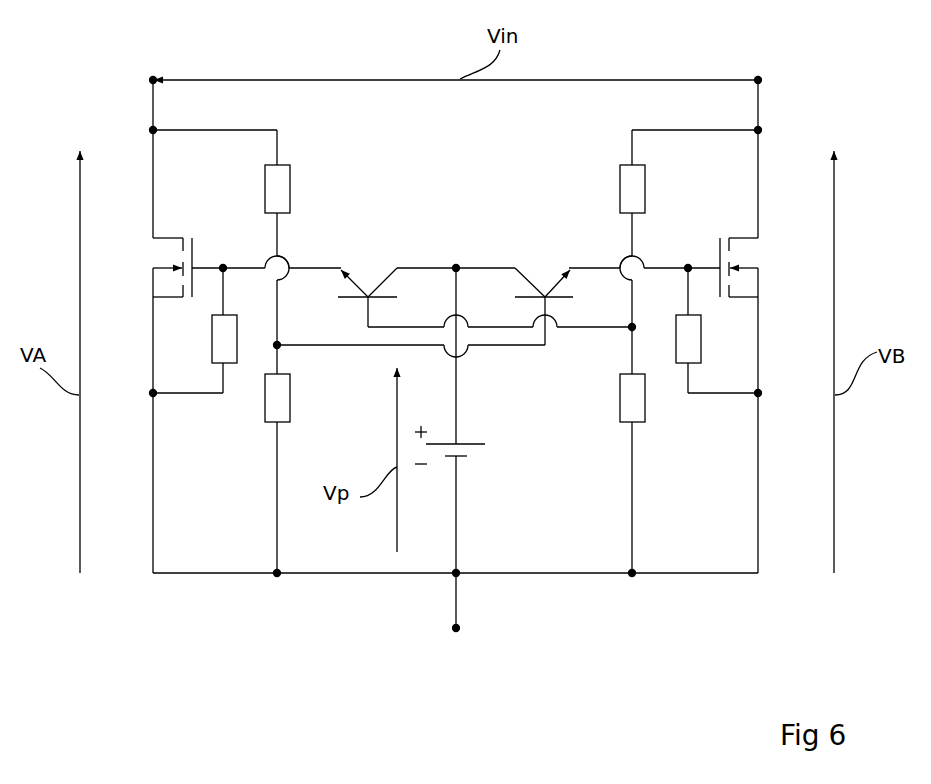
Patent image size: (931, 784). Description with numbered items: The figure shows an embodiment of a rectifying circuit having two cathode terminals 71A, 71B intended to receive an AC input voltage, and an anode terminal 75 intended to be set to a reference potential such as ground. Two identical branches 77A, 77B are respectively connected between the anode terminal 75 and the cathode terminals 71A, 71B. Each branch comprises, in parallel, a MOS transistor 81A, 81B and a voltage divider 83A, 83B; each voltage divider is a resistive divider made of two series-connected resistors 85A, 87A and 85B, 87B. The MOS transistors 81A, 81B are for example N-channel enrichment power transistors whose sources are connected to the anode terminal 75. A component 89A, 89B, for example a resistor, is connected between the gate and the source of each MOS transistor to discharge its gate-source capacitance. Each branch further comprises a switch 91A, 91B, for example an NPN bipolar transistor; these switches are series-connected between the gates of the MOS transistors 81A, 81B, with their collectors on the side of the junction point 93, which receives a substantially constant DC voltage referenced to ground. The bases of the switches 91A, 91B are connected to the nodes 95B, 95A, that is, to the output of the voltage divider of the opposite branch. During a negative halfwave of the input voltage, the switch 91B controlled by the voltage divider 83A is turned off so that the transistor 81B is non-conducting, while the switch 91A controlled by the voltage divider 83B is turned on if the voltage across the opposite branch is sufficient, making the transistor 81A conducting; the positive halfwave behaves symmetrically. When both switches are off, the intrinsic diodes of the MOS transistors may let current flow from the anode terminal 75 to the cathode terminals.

The cathode terminal 71A is at (153, 77).
The cathode terminal 71B is at (758, 77).
The anode terminal 75 is at (458, 632).
The branch 77A is at (187, 590).
The branch 77B is at (717, 590).
The MOS transistor 81A is at (162, 252).
The MOS transistor 81B is at (742, 251).
The voltage divider 83A is at (283, 238).
The voltage divider 83B is at (626, 238).
The resistor 85A is at (277, 405).
The resistor 85B is at (635, 405).
The resistor 87A is at (272, 190).
The resistor 87B is at (636, 192).
The component 89A is at (230, 349).
The component 89B is at (688, 350).
The switch 91A is at (372, 262).
The switch 91B is at (546, 262).
The junction point 93 is at (457, 263).
The node 95A is at (279, 347).
The node 95B is at (630, 329).